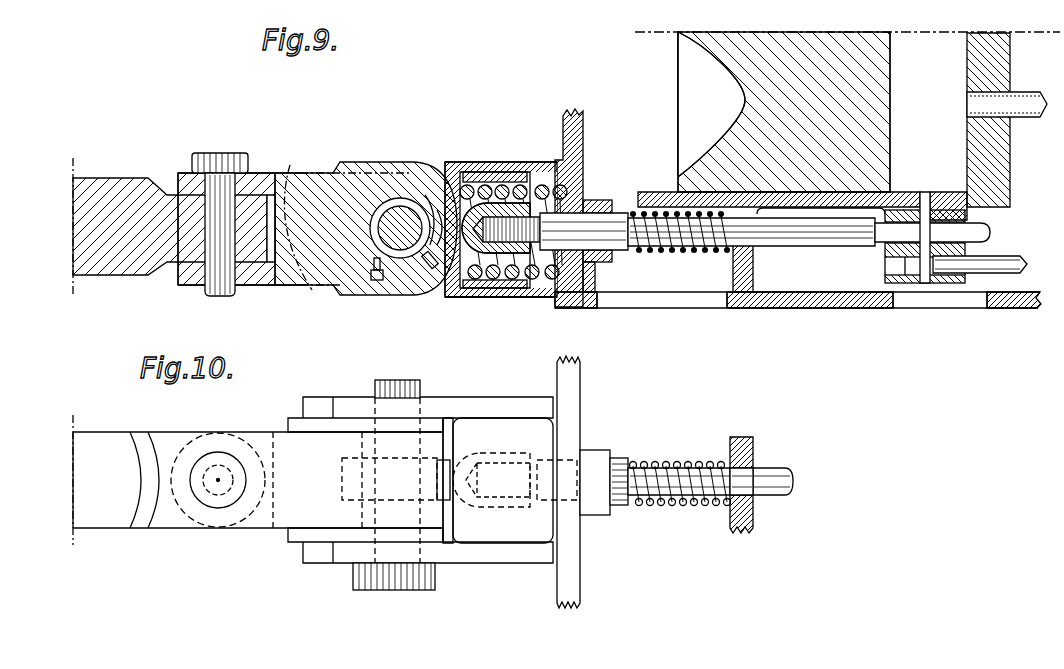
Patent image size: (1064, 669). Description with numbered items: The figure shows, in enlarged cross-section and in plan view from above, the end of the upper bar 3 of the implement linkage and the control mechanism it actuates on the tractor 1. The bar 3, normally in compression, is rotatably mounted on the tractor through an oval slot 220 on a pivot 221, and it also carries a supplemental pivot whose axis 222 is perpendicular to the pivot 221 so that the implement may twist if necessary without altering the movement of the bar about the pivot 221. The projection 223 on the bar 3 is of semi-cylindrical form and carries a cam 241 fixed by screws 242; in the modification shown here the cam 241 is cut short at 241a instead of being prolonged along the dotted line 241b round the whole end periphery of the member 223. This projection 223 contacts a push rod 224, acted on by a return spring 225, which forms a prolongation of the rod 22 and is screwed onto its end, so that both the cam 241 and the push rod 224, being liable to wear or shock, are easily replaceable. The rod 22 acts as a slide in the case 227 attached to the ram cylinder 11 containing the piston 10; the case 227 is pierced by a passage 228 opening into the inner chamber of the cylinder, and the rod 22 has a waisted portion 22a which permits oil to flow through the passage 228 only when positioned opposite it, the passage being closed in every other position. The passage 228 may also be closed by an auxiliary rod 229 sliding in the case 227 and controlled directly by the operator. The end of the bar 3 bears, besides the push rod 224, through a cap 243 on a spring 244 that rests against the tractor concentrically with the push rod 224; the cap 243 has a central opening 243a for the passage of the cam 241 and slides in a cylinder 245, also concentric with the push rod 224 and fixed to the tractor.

In FIG. 9, the tractor 1 is at (575, 150).
In FIG. 10, the tractor 1 is at (574, 424).
In FIG. 9, the upper bar 3 is at (88, 186).
In FIG. 10, the upper bar 3 is at (90, 447).
In FIG. 9, the piston 10 is at (718, 148).
In FIG. 9, the ram cylinder 11 is at (945, 200).
In FIG. 9, the rod 22 is at (785, 244).
In FIG. 10, the rod 22 is at (770, 474).
In FIG. 9, the waisted portion 22a is at (930, 284).
In FIG. 9, the oval slot 220 is at (380, 216).
In FIG. 9, the pivot 221 is at (400, 212).
In FIG. 10, the pivot 221 is at (396, 396).
In FIG. 9, the axis of supplemental pivot 222 is at (222, 195).
In FIG. 10, the axis of supplemental pivot 222 is at (216, 455).
In FIG. 9, the projection 223 is at (270, 174).
In FIG. 10, the projection 223 is at (292, 455).
In FIG. 9, the push rod 224 is at (480, 262).
In FIG. 10, the push rod 224 is at (485, 510).
In FIG. 9, the return spring 225 is at (659, 250).
In FIG. 10, the return spring 225 is at (686, 464).
In FIG. 9, the case 227 is at (907, 284).
In FIG. 9, the passage 228 is at (925, 195).
In FIG. 9, the rod of auxiliary closing device 229 is at (1012, 257).
In FIG. 9, the cam 241 is at (410, 292).
In FIG. 10, the cam 241 is at (437, 482).
In FIG. 9, the cut-short end of cam 241a is at (433, 205).
In FIG. 9, the dotted line of prolonged cam 241b is at (412, 178).
In FIG. 9, the screws 242 is at (375, 282).
In FIG. 9, the cap 243 is at (527, 172).
In FIG. 10, the cap 243 is at (448, 436).
In FIG. 9, the opening 243a is at (509, 177).
In FIG. 9, the spring 244 is at (500, 270).
In FIG. 9, the cylinder 245 is at (541, 298).
In FIG. 10, the cylinder 245 is at (507, 428).